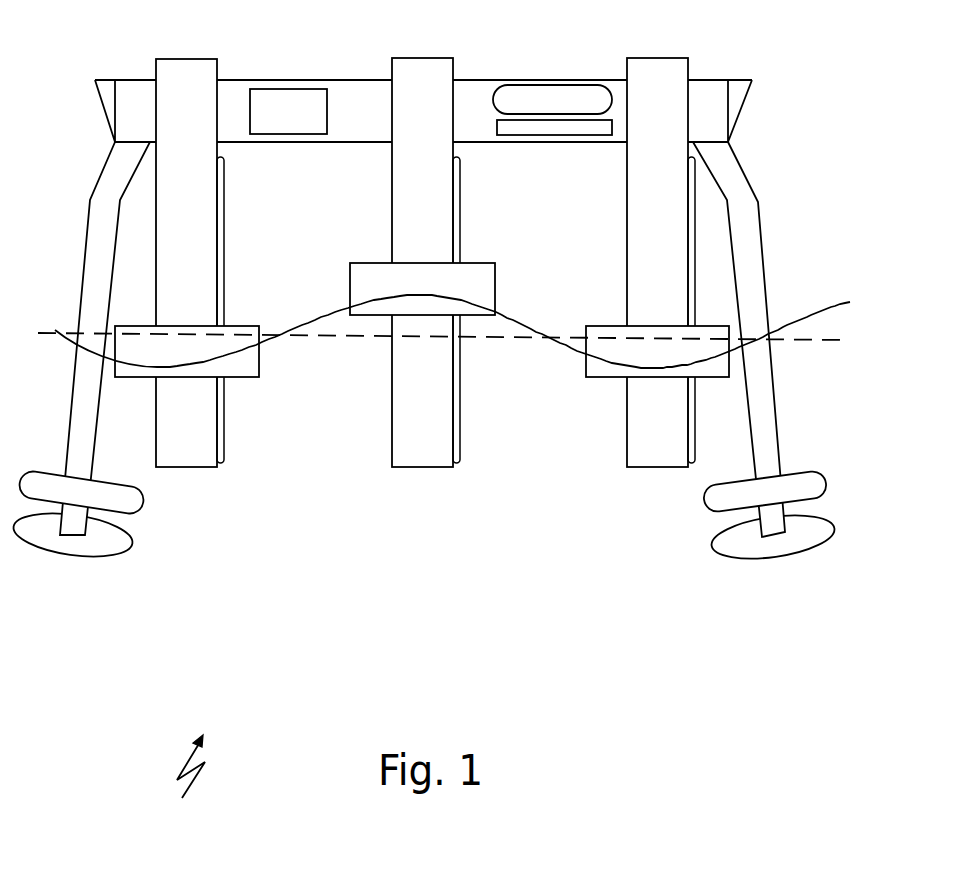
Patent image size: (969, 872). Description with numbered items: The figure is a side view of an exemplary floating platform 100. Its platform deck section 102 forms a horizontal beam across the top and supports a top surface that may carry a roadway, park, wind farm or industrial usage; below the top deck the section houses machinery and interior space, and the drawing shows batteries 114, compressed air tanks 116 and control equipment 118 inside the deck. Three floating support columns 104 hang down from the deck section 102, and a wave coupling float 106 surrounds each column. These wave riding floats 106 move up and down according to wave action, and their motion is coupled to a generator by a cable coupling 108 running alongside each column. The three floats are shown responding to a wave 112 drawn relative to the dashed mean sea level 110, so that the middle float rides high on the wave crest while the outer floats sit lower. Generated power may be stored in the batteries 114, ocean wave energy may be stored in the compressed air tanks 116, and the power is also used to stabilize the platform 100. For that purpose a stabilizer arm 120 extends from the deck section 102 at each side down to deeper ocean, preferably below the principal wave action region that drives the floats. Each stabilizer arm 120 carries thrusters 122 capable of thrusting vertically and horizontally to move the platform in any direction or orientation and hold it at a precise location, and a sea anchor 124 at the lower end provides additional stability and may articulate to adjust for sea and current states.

The platform 100 is at (176, 783).
The platform deck section 102 is at (358, 80).
The floating support columns 104 is at (180, 67).
The wave coupling floats 106 is at (259, 357).
The cable coupling 108 is at (224, 224).
The mean sea level 110 is at (480, 337).
The wave 112 is at (518, 324).
The batteries 114 is at (518, 128).
The compressed air tanks 116 is at (560, 102).
The control equipment 118 is at (289, 100).
The stabilizer arm 120 is at (83, 263).
The thrusters 122 is at (140, 506).
The sea anchor 124 is at (115, 555).